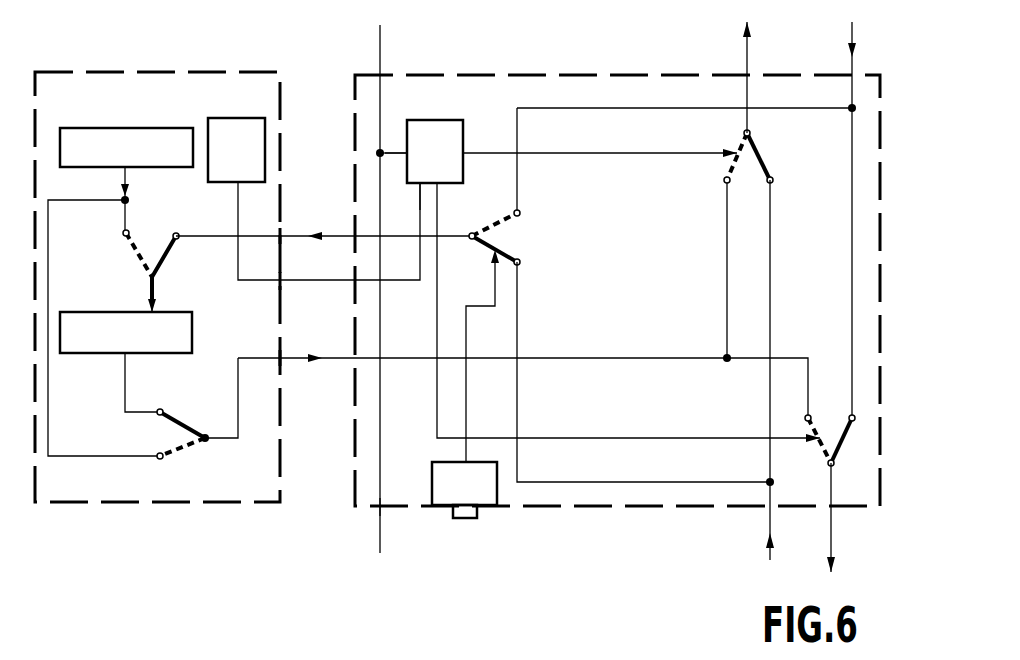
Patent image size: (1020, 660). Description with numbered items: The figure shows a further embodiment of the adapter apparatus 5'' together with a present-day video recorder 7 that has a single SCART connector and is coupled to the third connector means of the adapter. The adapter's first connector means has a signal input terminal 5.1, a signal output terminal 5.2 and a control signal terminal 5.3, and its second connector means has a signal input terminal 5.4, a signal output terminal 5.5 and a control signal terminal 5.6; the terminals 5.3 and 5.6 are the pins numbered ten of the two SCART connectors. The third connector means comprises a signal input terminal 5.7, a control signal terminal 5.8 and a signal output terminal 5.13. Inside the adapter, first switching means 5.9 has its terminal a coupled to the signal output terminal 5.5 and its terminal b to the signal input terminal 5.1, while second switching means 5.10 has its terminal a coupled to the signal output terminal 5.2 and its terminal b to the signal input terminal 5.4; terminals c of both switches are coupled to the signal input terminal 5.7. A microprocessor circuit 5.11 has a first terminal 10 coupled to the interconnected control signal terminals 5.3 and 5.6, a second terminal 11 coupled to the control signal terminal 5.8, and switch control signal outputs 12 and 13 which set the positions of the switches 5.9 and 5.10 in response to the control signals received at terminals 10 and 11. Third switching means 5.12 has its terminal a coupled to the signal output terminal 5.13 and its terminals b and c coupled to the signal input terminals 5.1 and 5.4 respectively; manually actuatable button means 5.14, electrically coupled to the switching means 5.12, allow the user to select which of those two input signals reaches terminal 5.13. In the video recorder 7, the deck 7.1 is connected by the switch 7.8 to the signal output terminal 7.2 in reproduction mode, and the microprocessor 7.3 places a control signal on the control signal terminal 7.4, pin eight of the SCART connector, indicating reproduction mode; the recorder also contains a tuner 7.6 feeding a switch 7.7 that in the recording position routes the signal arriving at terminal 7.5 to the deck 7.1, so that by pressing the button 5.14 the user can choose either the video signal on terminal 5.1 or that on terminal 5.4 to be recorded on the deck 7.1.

The video recorder 7 is at (176, 72).
The deck 7.1 is at (105, 310).
The signal output terminal 7.2 is at (280, 358).
The microprocessor 7.3 is at (231, 125).
The control signal terminal 7.4 is at (282, 282).
The VCR signal input terminal 7.5 is at (283, 235).
The tuner 7.6 is at (115, 128).
The switch 7.7 is at (151, 262).
The switch 7.8 is at (178, 437).
The adapter apparatus 5'' is at (617, 268).
The signal input terminal 5.1 is at (849, 73).
The signal output terminal 5.2 is at (750, 73).
The control signal terminal 5.3 is at (383, 74).
The signal input terminal 5.4 is at (770, 510).
The signal output terminal 5.5 is at (830, 508).
The control signal terminal 5.6 is at (383, 508).
The signal input terminal 5.7 is at (352, 362).
The control signal terminal 5.8 is at (352, 279).
The first switching means 5.9 is at (831, 448).
The second switching means 5.10 is at (748, 160).
The microprocessor circuit 5.11 is at (450, 130).
The third switching means 5.12 is at (490, 231).
The signal output terminal 5.13 is at (352, 234).
The manually actuatable button means 5.14 is at (468, 512).
The first terminal 10 is at (404, 150).
The second terminal 11 is at (416, 188).
The switch control signal output 12 is at (440, 188).
The switch control signal output 13 is at (466, 151).